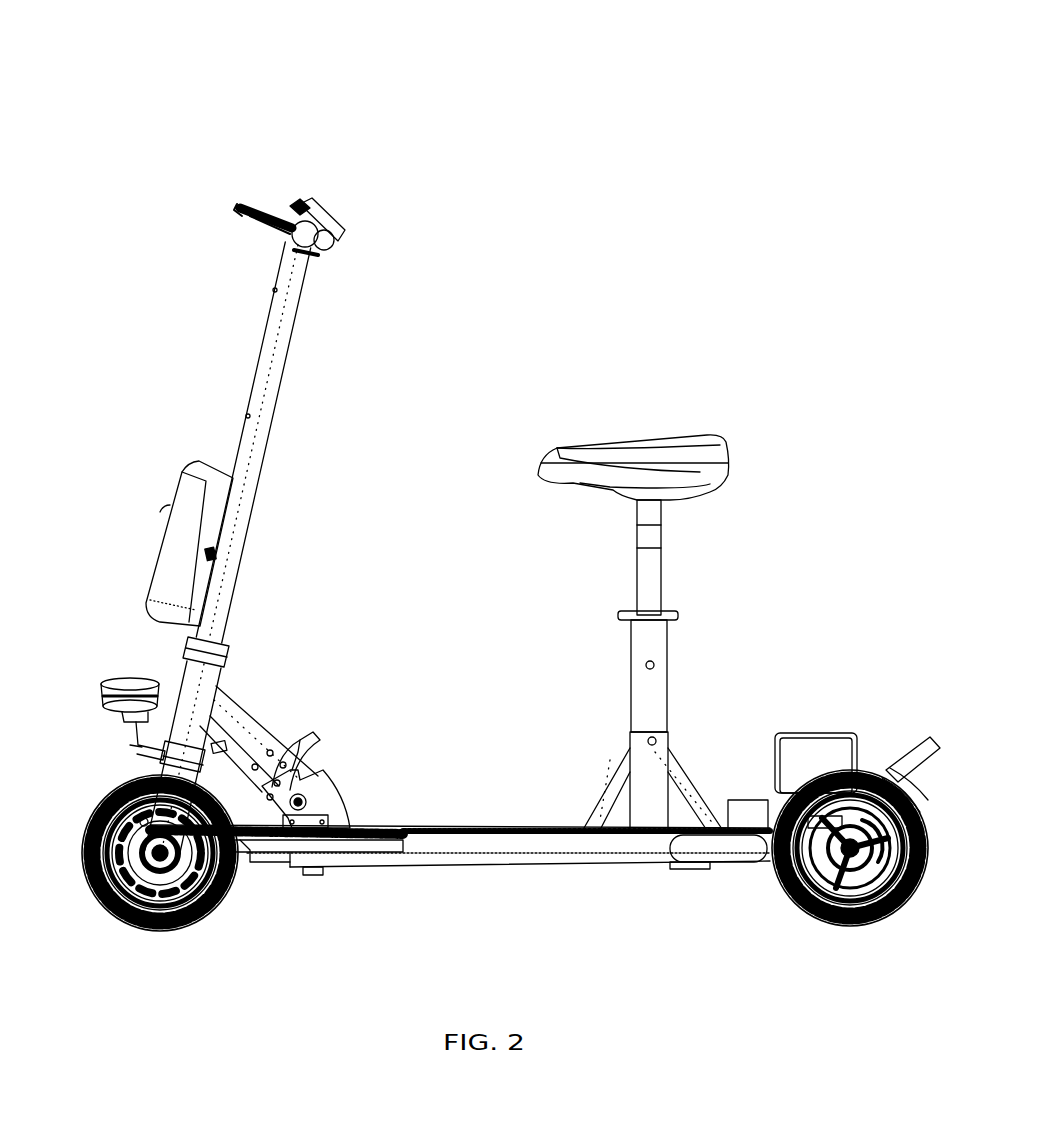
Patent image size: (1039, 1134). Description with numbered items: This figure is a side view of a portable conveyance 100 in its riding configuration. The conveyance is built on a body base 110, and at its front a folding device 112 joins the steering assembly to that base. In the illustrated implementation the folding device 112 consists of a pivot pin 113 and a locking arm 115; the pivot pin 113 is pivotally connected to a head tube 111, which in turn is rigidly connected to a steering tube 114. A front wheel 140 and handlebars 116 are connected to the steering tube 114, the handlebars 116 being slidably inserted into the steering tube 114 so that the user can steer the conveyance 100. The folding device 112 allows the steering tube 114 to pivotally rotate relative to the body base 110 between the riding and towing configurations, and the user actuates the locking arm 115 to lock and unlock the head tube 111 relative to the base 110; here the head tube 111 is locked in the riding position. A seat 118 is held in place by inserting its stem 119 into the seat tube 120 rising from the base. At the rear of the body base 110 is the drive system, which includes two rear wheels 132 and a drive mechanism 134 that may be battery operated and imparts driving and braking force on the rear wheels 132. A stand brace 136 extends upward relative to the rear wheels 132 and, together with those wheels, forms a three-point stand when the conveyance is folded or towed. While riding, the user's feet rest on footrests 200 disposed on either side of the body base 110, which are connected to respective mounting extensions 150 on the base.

The portable conveyance 100 is at (193, 88).
The body base 110 is at (462, 829).
The head tube 111 is at (228, 692).
The folding device 112 is at (325, 778).
The pivot pin 113 is at (305, 803).
The steering tube 114 is at (259, 479).
The locking arm 115 is at (318, 735).
The handlebars 116 is at (344, 239).
The seat 118 is at (715, 432).
The stem 119 is at (660, 570).
The seat tube 120 is at (665, 665).
The rear wheels 132 is at (783, 887).
The drive mechanism 134 is at (818, 733).
The stand brace 136 is at (936, 738).
The front wheel 140 is at (100, 800).
The mounting extensions 150 is at (262, 840).
The footrests 200 is at (146, 826).